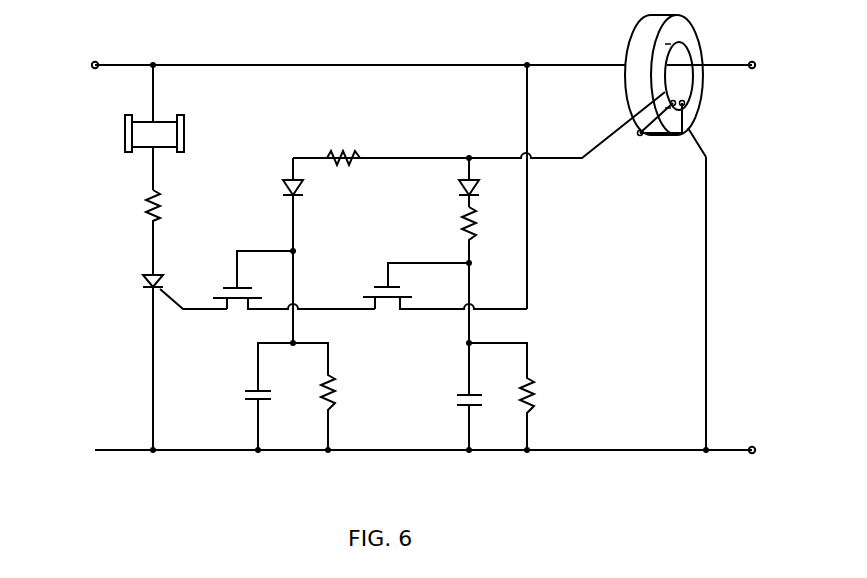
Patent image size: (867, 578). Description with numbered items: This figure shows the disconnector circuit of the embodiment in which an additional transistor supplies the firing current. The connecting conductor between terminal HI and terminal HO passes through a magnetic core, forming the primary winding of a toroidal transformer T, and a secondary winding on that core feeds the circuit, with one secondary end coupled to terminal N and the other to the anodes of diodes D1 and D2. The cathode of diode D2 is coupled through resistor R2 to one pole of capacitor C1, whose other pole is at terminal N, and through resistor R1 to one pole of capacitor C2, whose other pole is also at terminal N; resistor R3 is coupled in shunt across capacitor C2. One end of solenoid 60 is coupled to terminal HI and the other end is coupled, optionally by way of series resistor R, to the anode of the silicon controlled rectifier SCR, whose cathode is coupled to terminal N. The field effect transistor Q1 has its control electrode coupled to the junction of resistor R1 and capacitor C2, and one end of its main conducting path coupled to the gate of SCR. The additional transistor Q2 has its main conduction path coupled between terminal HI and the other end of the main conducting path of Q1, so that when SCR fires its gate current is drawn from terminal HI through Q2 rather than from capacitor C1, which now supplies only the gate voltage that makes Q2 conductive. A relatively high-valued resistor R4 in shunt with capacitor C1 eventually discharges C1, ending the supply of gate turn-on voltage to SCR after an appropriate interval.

The terminal HI is at (96, 61).
The terminal HO is at (754, 61).
The terminal N is at (754, 446).
The solenoid 60 is at (184, 120).
The series resistor R is at (158, 192).
The silicon controlled rectifier SCR is at (148, 290).
The field effect transistor Q1 is at (233, 312).
The additional transistor Q2 is at (383, 284).
The diode D1 is at (291, 178).
The diode D2 is at (459, 182).
The resistor R1 is at (371, 122).
The resistor R2 is at (462, 240).
The resistor R3 is at (336, 394).
The relatively high-valued resistor R4 is at (534, 400).
The capacitor C1 is at (460, 392).
The capacitor C2 is at (248, 400).
The toroidal transformer T is at (704, 85).